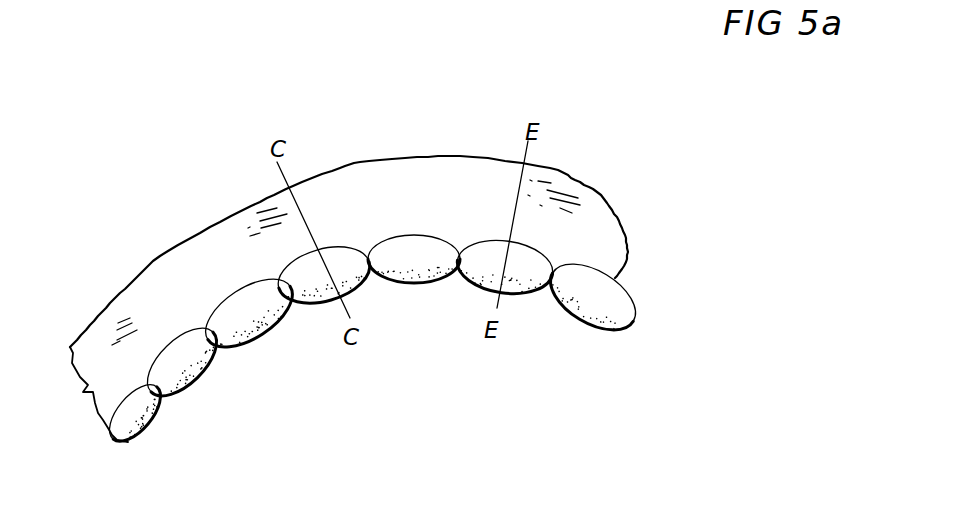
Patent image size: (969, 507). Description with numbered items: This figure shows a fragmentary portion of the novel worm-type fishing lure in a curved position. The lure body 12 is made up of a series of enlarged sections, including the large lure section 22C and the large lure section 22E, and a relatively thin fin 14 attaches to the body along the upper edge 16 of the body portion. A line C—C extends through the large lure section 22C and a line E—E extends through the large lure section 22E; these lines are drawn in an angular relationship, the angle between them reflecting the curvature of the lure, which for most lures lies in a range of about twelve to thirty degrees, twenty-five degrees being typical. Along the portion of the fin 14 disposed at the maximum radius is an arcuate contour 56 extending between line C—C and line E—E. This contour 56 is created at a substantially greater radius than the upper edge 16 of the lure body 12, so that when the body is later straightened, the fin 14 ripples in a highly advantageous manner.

The lure body 12 is at (593, 322).
The fin 14 is at (374, 273).
The upper edge of the body portion 16 is at (428, 233).
The arcuate contour 56 is at (417, 157).
The large lure section 22C is at (313, 290).
The large lure section 22E is at (477, 273).